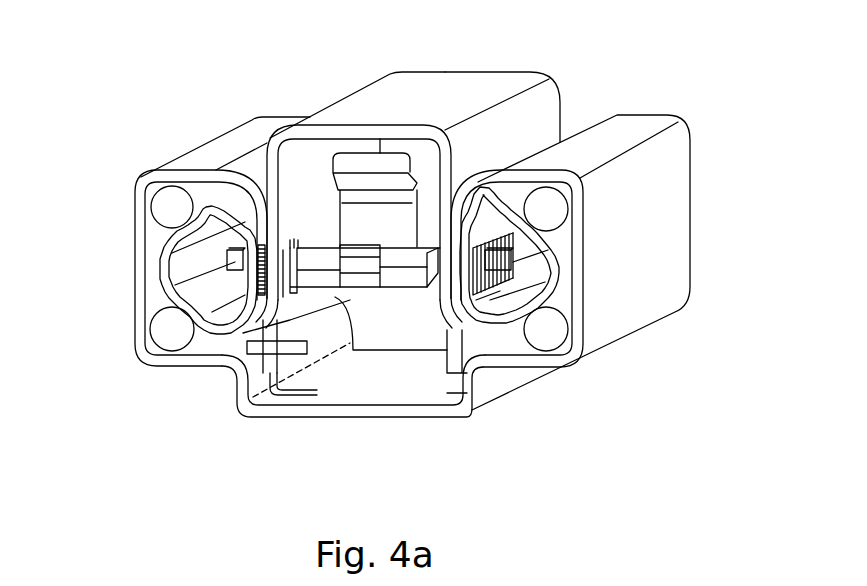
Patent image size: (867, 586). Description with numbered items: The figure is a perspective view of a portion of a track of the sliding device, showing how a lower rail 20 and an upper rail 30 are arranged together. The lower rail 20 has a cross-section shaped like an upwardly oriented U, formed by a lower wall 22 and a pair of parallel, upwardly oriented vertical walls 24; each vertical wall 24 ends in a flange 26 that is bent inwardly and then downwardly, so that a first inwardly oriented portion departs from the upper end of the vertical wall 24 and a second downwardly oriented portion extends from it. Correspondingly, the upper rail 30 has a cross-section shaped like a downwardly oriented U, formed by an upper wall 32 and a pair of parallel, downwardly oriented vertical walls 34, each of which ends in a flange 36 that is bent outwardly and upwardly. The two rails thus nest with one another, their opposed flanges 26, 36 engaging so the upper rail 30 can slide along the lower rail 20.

The lower rail 20 is at (372, 256).
The lower wall 22 is at (345, 418).
The vertical wall 24 is at (130, 303).
The flange 26 is at (230, 152).
The upper rail 30 is at (482, 87).
The upper wall 32 is at (370, 100).
The vertical wall 34 is at (305, 167).
The flange 36 is at (167, 262).